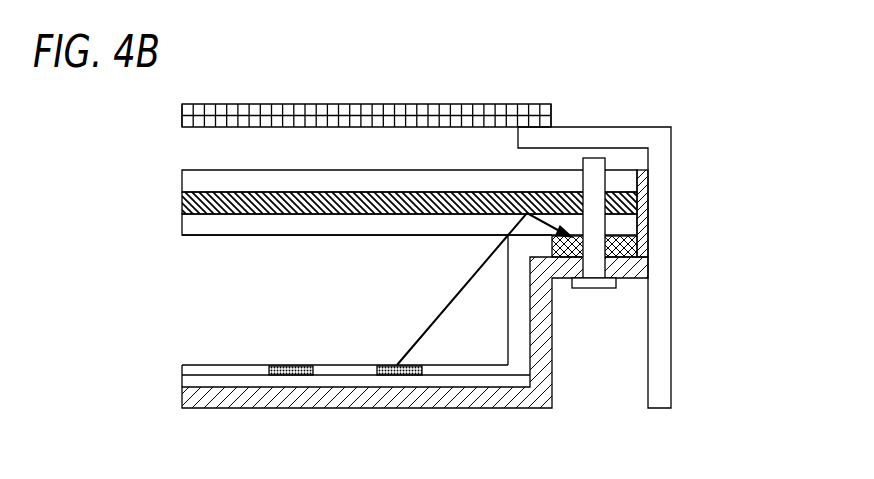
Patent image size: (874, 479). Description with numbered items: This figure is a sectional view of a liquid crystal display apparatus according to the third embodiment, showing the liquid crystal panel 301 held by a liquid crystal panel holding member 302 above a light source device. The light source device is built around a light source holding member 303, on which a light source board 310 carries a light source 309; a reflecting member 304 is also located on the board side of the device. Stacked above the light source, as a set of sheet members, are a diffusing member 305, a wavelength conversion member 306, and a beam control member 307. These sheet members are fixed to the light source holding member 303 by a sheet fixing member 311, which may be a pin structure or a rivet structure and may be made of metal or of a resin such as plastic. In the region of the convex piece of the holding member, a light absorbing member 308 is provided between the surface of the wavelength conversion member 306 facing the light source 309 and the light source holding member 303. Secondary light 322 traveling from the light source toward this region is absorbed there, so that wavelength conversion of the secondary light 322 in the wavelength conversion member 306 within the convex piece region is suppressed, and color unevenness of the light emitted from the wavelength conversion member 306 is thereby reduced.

The liquid crystal panel 301 is at (182, 129).
The liquid crystal panel holding member 302 is at (655, 388).
The light source holding member 303 is at (190, 401).
The reflecting member 304 is at (192, 365).
The diffusing member 305 is at (182, 245).
The wavelength conversion member 306 is at (185, 223).
The beam control member 307 is at (182, 191).
The light absorbing member 308 is at (633, 243).
The light source 309 is at (412, 365).
The light source board 310 is at (182, 381).
The sheet fixing member 311 is at (594, 158).
The secondary light 322 is at (442, 308).